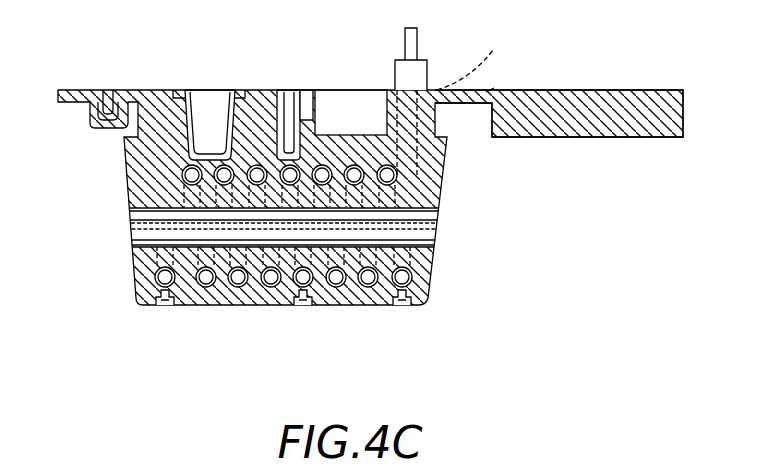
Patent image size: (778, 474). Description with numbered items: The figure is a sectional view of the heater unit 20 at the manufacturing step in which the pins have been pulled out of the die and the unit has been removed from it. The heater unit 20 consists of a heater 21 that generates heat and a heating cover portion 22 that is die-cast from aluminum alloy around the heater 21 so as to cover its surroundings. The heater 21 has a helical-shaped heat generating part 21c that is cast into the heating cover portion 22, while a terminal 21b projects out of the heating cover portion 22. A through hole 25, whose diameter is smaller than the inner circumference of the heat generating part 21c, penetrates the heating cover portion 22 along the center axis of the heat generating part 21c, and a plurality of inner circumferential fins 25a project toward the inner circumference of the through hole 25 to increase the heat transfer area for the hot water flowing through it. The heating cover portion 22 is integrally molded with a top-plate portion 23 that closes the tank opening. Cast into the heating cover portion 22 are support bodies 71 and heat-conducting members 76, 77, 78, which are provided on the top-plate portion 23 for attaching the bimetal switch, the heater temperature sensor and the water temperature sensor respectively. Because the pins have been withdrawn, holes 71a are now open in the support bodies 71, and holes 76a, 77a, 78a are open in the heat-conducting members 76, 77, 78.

The heater unit 20 is at (563, 90).
The heater 21 is at (457, 101).
The terminal 21b is at (417, 53).
The heat generating part 21c is at (354, 166).
The heating cover portion 22 is at (357, 191).
The top-plate portion 23 is at (490, 90).
The through hole 25 is at (341, 226).
The inner circumferential fins 25a is at (428, 227).
The support bodies 71 is at (289, 324).
The holes 71a is at (167, 305).
The heat-conducting member (support body) 76 is at (188, 92).
The hole 76a is at (212, 152).
The heat-conducting member (support body) 77 is at (299, 92).
The hole 77a is at (287, 92).
The heat-conducting member (tube body) 78 is at (75, 72).
The hole 78a is at (110, 103).